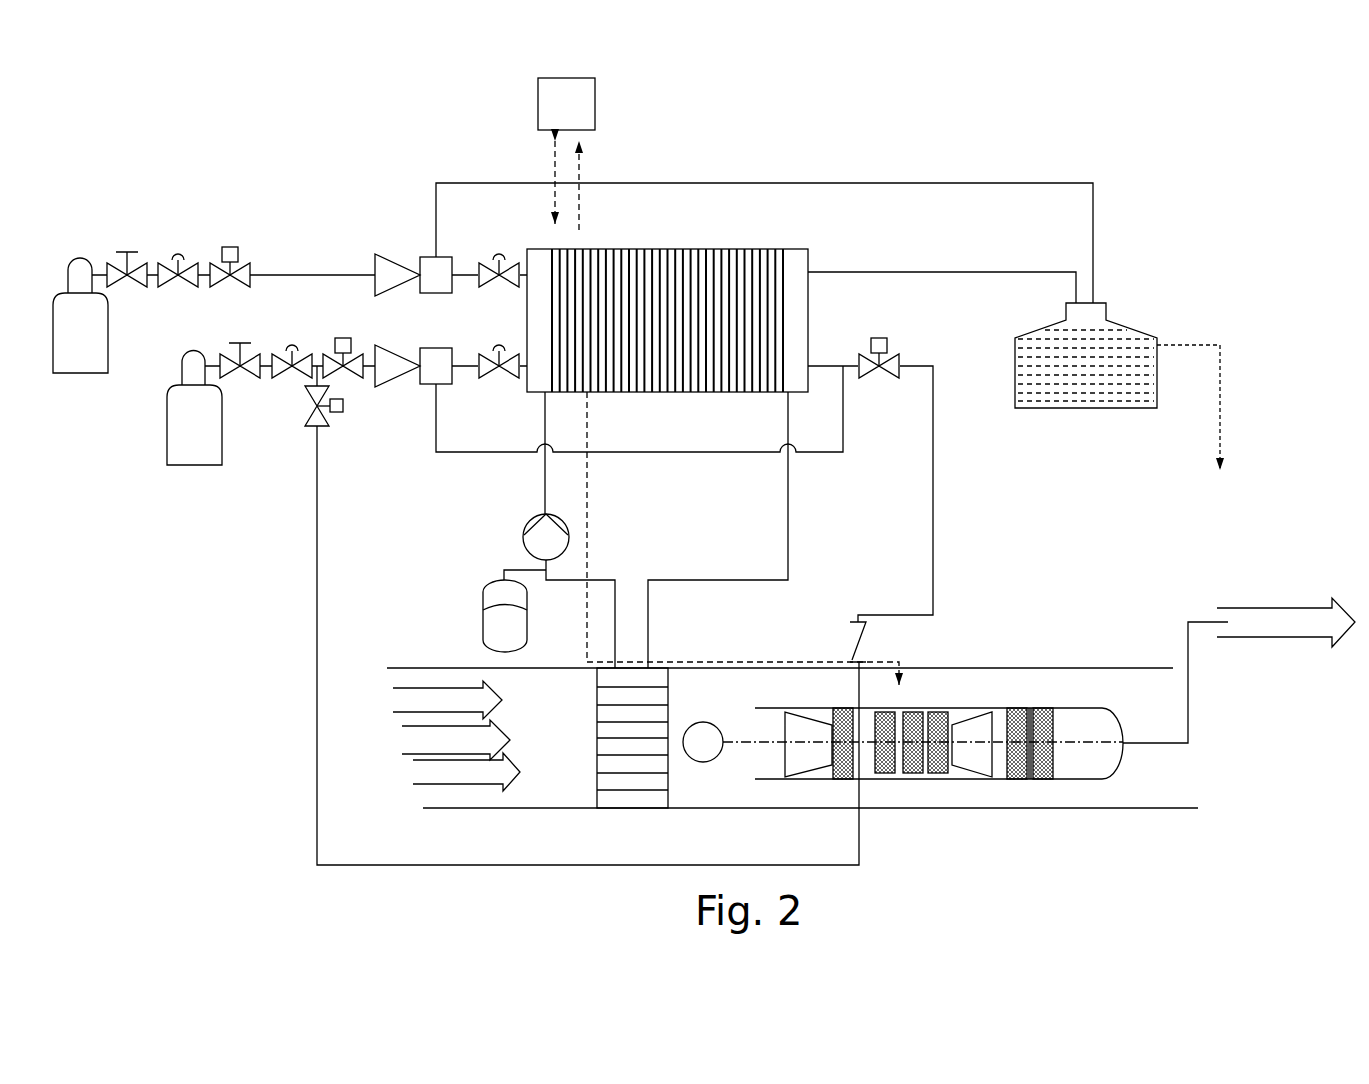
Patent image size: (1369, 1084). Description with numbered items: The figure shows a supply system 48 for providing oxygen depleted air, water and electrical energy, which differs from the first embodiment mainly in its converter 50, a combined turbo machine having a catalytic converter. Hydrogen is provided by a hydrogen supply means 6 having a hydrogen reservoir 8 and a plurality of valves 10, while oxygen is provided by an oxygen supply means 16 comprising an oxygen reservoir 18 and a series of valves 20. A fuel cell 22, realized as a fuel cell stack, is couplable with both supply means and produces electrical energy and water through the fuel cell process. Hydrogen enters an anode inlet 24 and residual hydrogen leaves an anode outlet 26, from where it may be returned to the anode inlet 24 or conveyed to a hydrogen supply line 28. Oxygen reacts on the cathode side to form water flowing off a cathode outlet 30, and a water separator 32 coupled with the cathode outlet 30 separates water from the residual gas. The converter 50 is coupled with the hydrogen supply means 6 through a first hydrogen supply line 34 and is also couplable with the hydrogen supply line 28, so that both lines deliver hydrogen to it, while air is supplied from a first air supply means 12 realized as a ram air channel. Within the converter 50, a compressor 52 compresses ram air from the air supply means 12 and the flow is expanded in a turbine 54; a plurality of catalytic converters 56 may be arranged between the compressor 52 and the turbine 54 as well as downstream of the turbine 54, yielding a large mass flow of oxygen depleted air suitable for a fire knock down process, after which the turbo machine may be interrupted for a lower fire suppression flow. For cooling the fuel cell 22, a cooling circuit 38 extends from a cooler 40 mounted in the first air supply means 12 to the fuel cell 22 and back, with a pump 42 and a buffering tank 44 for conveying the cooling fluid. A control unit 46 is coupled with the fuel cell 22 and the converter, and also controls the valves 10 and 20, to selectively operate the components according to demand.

The hydrogen supply means 6 is at (278, 497).
The hydrogen reservoir 8 is at (177, 425).
The plurality of valves 10 is at (278, 387).
The first air supply means 12 is at (468, 818).
The oxygen supply means 16 is at (272, 223).
The oxygen reservoir 18 is at (100, 320).
The series of valves 20 is at (188, 238).
The fuel cell 22 is at (745, 250).
The anode inlet 24 is at (520, 385).
The anode outlet 26 is at (812, 358).
The hydrogen supply line 28 is at (523, 257).
The cathode outlet 30 is at (813, 264).
The water separator 32 is at (1122, 340).
The first hydrogen supply line 34 is at (317, 800).
The cooling circuit 38 is at (790, 513).
The cooler 40 is at (603, 710).
The pump 42 is at (527, 545).
The buffering tank 44 is at (495, 625).
The control unit 46 is at (582, 103).
The system 48 is at (1002, 170).
The converter 50 is at (1023, 695).
The compressor 52 is at (793, 720).
The turbine 54 is at (975, 722).
The catalytic converters 56 is at (912, 768).